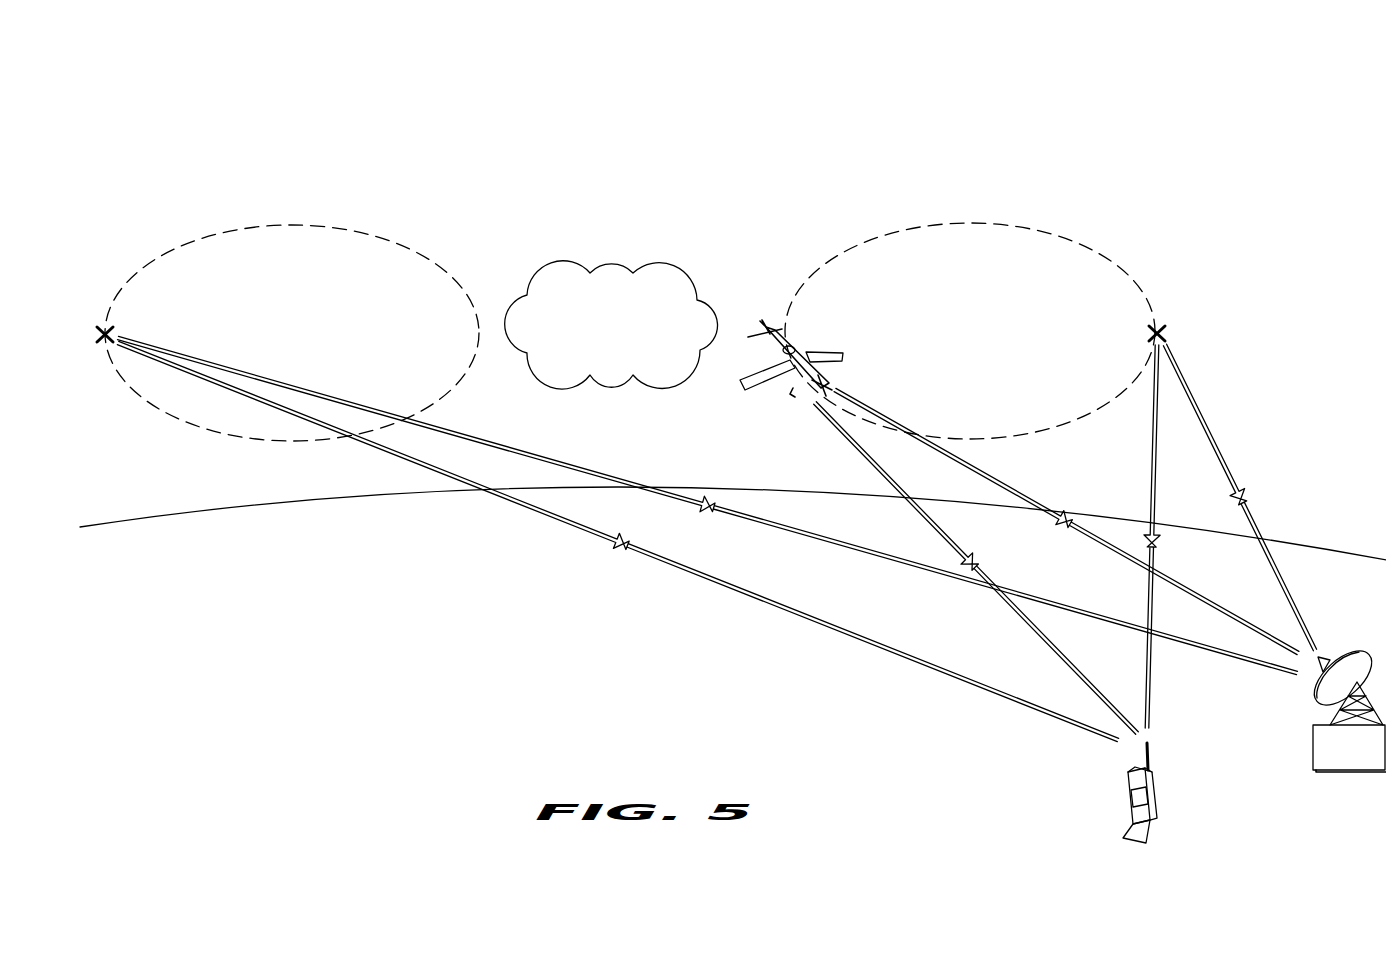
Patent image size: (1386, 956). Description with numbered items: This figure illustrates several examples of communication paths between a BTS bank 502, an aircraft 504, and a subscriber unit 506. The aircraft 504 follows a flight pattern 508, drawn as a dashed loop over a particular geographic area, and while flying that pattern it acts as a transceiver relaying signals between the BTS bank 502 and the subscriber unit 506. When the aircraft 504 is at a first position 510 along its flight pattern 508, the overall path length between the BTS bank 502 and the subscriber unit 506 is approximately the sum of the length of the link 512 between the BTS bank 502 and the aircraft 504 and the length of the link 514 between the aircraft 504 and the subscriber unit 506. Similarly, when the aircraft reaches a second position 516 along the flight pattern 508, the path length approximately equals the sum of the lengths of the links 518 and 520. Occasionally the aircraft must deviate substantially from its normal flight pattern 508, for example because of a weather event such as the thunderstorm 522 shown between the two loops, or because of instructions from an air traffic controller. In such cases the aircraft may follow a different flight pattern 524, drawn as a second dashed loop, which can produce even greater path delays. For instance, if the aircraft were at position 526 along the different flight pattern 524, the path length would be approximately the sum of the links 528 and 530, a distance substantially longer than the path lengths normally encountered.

The BTS bank 502 is at (1373, 768).
The aircraft 504 is at (835, 352).
The subscriber unit 506 is at (1158, 790).
The flight pattern 508 is at (993, 339).
The first position 510 is at (752, 391).
The link between the BTS and the aircraft 512 is at (1040, 504).
The link between the aircraft and the subscriber unit 514 is at (962, 555).
The second position 516 is at (1168, 335).
The link 518 is at (1207, 430).
The link 520 is at (1153, 456).
The thunderstorm 522 is at (635, 341).
The different flight pattern 524 is at (315, 341).
The position 526 is at (115, 333).
The link 528 is at (824, 543).
The link 530 is at (869, 642).